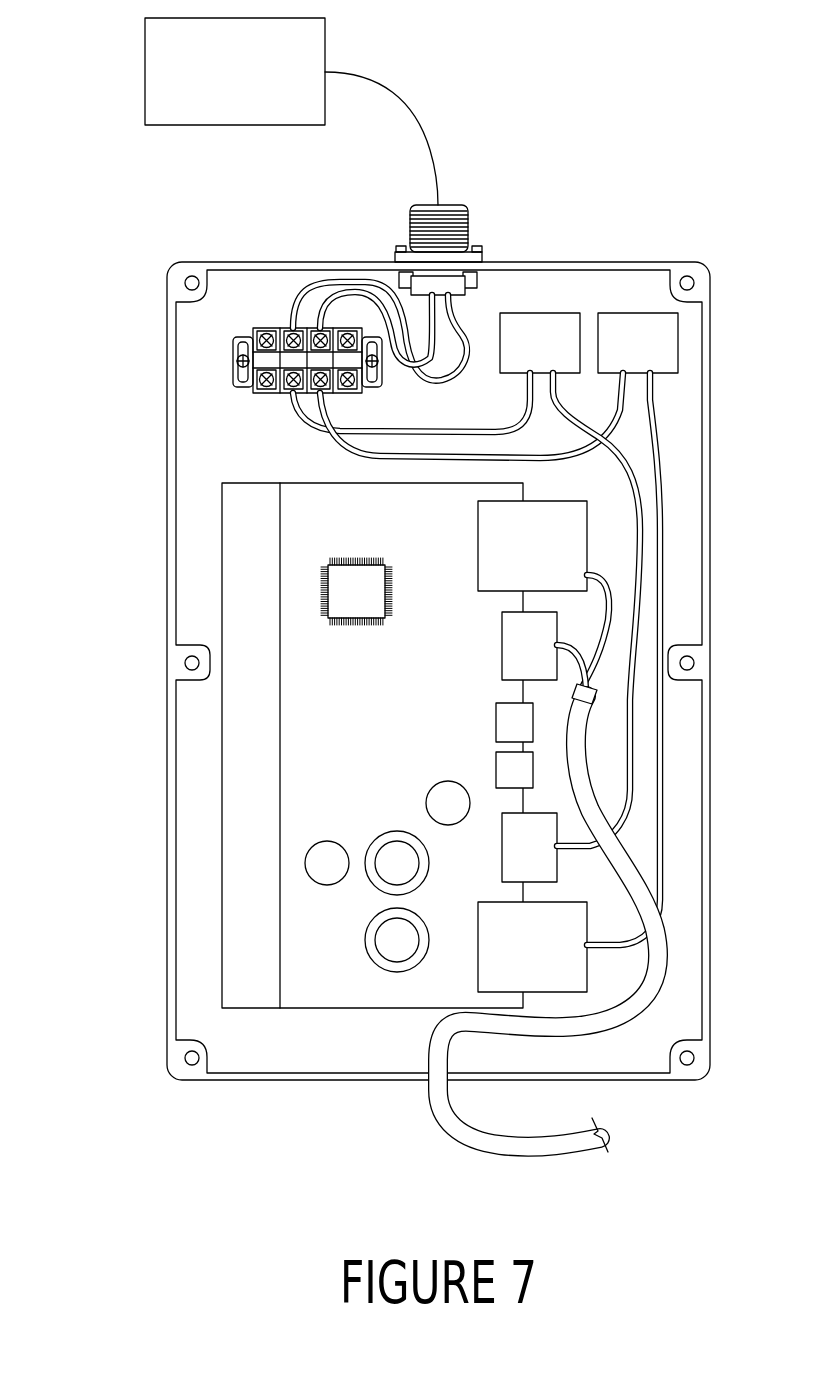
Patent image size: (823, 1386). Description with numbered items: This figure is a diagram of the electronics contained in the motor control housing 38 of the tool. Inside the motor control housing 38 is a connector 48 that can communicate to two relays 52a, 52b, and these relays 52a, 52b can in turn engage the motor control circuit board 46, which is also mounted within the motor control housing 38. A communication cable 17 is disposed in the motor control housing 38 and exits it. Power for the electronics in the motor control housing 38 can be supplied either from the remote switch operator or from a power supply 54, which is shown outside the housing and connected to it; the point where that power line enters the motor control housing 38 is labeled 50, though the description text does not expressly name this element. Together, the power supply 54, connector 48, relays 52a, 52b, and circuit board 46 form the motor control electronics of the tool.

The power supply 54 is at (145, 72).
The power connector 50 is at (468, 230).
The relay 52a is at (540, 313).
The relay 52b is at (637, 313).
The connector 48 is at (266, 328).
The motor control circuit board 46 is at (310, 507).
The motor control housing 38 is at (170, 870).
The communication cable 17 is at (442, 1056).